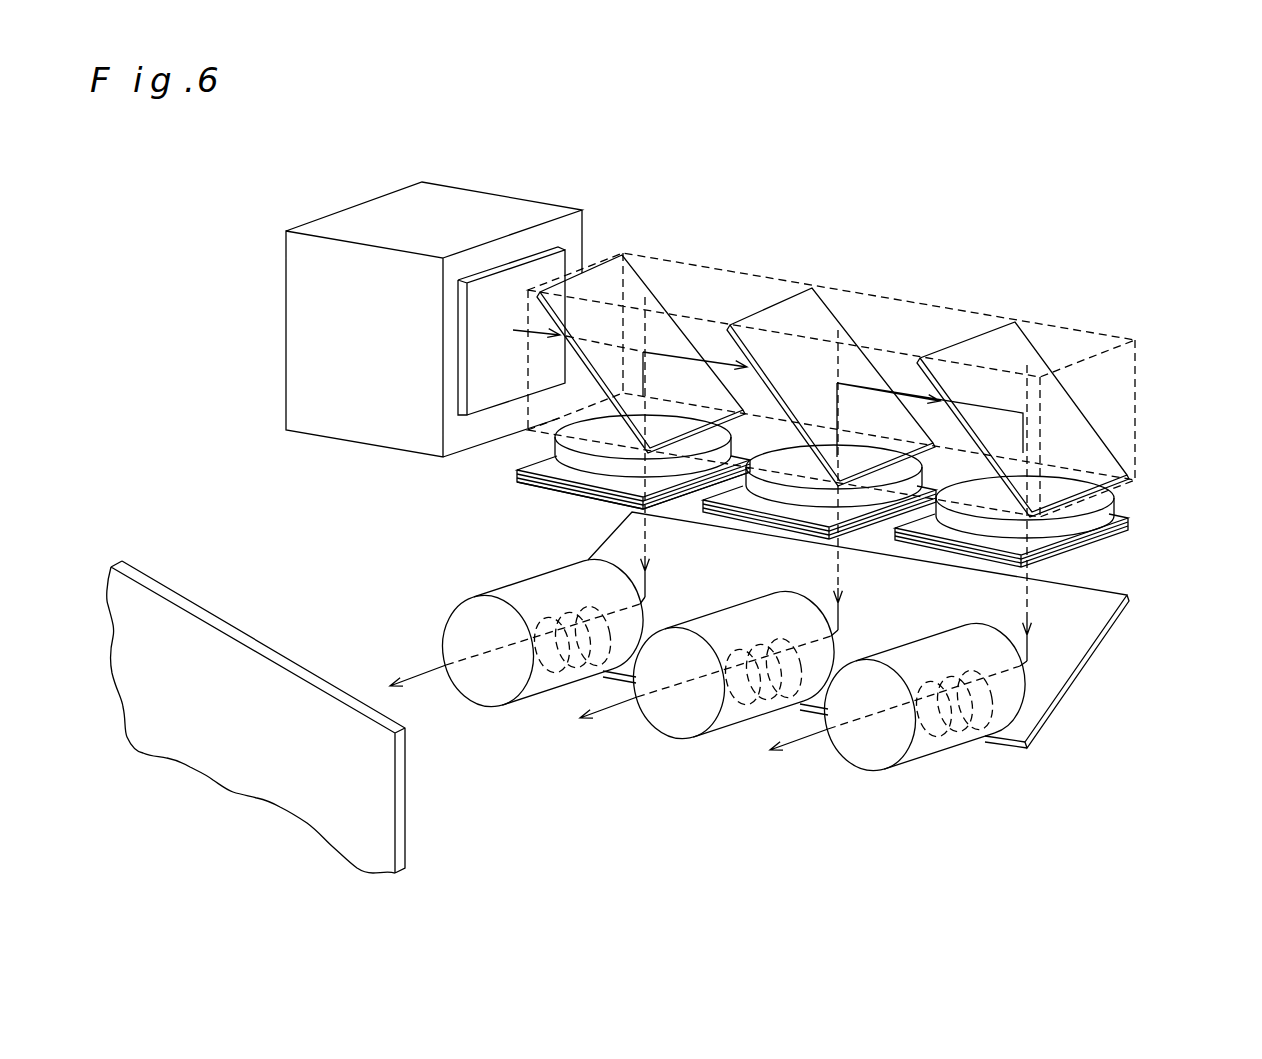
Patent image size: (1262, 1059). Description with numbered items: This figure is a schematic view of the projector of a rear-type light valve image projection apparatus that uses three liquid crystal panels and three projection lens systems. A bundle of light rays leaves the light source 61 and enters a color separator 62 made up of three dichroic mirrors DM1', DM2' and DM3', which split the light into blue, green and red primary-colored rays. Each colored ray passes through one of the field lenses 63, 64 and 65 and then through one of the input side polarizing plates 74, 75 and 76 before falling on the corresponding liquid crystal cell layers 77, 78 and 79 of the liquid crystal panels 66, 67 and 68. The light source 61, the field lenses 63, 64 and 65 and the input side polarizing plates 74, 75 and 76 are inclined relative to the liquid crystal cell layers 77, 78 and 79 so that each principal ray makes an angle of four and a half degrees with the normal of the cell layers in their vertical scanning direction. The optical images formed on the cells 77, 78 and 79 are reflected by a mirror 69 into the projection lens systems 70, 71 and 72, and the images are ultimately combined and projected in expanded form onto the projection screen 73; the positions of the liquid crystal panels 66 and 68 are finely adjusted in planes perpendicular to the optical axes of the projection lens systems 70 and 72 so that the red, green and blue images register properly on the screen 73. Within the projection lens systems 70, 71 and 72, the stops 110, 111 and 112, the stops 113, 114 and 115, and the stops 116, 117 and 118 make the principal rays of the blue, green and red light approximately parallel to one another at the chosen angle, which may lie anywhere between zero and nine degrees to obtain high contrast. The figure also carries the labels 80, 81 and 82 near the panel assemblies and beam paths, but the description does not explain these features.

The light source 61 is at (322, 222).
The color separator 62 is at (1135, 342).
The field lens 63 is at (555, 437).
The field lens 64 is at (766, 447).
The field lens 65 is at (1114, 498).
The liquid crystal panel 66 is at (584, 524).
The liquid crystal panel 67 is at (801, 406).
The liquid crystal panel 68 is at (1049, 565).
The mirror 69 is at (1106, 628).
The projection lens system 70 is at (509, 690).
The projection lens system 71 is at (701, 726).
The projection lens system 72 is at (937, 742).
The projection screen 73 is at (190, 610).
The input side polarizing plate 74 is at (557, 490).
The input side polarizing plate 75 is at (802, 526).
The input side polarizing plate 76 is at (1000, 562).
The liquid crystal cell layer 77 is at (573, 485).
The liquid crystal cell layer 78 is at (716, 516).
The liquid crystal cell layer 79 is at (950, 552).
The layer of first modulator 80 is at (550, 488).
The reflected blue light beam 81 is at (663, 452).
The reflected green light beam 82 is at (865, 484).
The stop 110 is at (583, 647).
The stop 111 is at (577, 657).
The stop 112 is at (553, 668).
The stop 113 is at (803, 703).
The stop 114 is at (757, 680).
The stop 115 is at (760, 687).
The stop 116 is at (1002, 738).
The stop 117 is at (950, 727).
The stop 118 is at (937, 733).
The dichroic mirror DM1' is at (641, 316).
The dichroic mirror DM2' is at (833, 346).
The dichroic mirror DM3' is at (1023, 381).